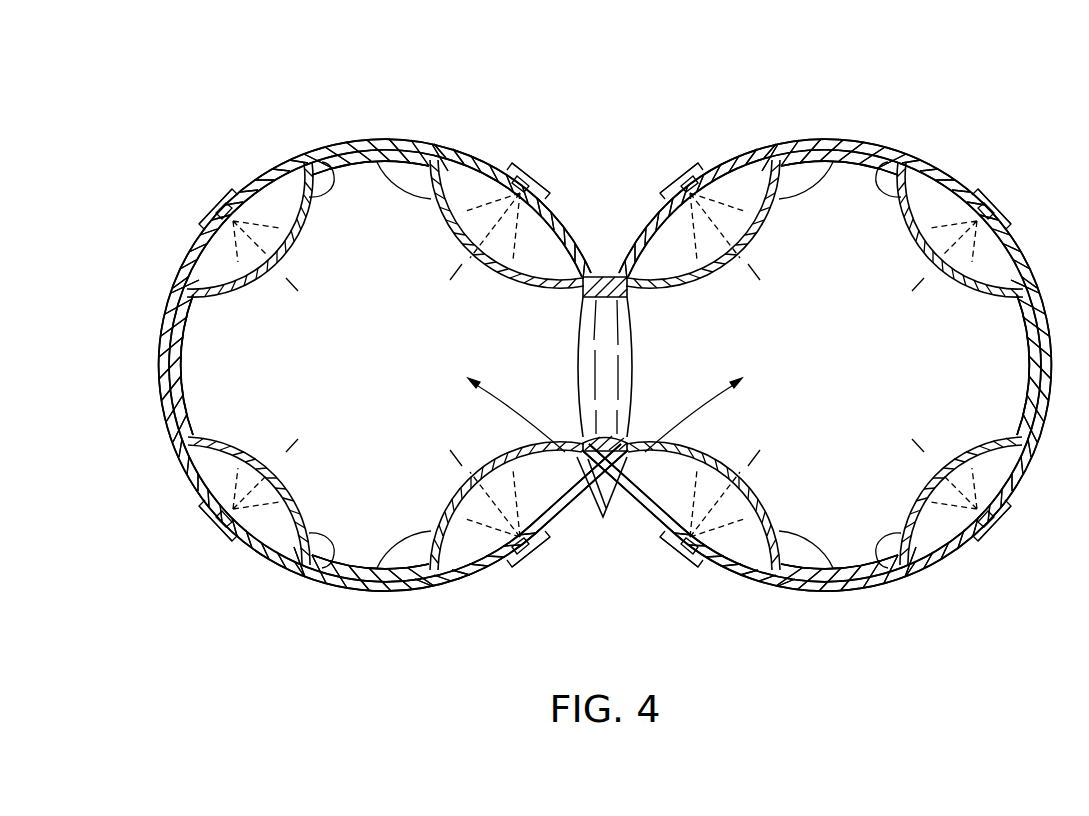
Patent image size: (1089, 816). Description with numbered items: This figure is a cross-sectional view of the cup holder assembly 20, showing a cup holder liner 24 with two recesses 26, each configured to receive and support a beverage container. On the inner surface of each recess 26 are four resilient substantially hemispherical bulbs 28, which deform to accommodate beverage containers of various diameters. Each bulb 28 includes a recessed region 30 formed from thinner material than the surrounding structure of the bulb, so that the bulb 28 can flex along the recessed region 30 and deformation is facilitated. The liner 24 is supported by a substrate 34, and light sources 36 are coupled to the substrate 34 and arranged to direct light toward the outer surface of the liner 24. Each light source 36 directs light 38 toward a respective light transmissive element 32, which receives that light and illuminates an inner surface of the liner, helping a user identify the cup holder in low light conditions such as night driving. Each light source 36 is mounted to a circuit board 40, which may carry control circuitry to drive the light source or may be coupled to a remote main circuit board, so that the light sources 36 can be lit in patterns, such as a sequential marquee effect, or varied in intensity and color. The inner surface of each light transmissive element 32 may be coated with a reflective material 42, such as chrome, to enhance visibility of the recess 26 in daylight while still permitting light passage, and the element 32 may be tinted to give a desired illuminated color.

The cup holder assembly 20 is at (222, 105).
The cup holder liner 24 is at (400, 587).
The recess 26 is at (603, 520).
The resilient substantially hemispherical bulb 28 is at (852, 570).
The recessed region 30 is at (916, 470).
The light transmissive element 32 is at (934, 472).
The substrate 34 is at (192, 245).
The light source 36 is at (972, 534).
The light 38 is at (950, 520).
The circuit board 40 is at (992, 555).
The reflective material 42 is at (931, 465).